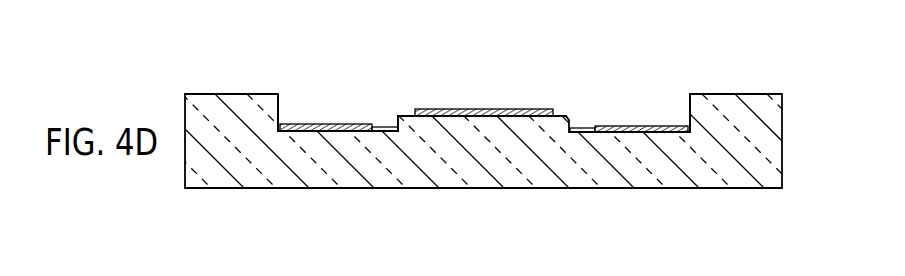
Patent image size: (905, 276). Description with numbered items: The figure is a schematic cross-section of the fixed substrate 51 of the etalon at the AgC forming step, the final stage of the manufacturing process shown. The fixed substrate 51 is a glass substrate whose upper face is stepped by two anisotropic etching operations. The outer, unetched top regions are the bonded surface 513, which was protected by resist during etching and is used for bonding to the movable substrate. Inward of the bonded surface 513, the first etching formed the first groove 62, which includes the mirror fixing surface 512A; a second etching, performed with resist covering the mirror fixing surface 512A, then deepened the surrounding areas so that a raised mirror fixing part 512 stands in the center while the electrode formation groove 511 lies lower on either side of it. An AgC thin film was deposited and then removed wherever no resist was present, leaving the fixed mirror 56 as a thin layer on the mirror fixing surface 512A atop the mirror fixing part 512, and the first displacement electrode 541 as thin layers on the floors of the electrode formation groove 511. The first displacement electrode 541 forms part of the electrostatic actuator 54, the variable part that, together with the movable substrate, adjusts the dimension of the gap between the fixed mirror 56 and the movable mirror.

The fixed substrate 51 is at (782, 135).
The electrode formation groove 511 is at (687, 98).
The mirror fixing part 512 is at (397, 118).
The mirror fixing surface 512A is at (541, 98).
The bonded surface 513 is at (232, 94).
The electrostatic actuator 54 is at (327, 131).
The first displacement electrode 541 is at (484, 193).
The fixed mirror 56 is at (489, 109).
The first groove 62 is at (583, 128).